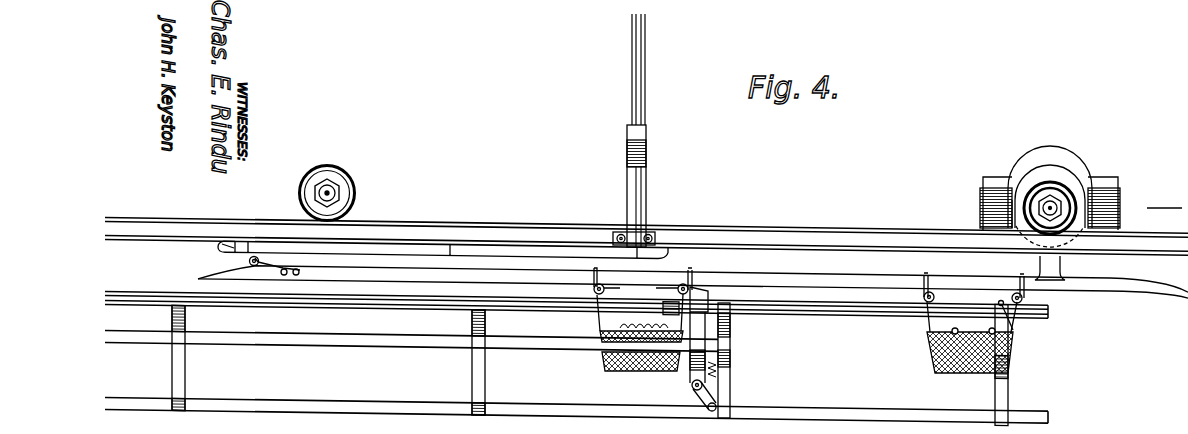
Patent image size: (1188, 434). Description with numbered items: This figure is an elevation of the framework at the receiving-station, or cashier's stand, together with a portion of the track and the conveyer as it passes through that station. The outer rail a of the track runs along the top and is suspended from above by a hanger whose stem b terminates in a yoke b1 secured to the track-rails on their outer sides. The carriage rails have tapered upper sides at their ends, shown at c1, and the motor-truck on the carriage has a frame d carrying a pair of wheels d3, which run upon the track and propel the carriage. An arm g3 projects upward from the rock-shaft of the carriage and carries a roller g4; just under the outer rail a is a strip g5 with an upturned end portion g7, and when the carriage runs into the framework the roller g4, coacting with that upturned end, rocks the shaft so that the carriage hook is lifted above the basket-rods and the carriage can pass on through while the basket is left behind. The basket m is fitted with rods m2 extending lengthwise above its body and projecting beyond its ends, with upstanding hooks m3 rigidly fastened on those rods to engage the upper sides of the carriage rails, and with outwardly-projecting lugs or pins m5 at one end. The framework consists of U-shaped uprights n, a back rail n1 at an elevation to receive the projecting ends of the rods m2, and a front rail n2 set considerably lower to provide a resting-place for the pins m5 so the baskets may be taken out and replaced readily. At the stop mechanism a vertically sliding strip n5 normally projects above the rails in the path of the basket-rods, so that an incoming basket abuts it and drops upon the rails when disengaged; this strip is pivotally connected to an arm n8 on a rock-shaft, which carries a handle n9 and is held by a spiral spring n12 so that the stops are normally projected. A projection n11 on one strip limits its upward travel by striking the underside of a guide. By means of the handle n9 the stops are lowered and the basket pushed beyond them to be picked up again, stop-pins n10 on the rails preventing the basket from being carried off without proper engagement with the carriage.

The outer rail a is at (137, 219).
The stem b is at (646, 63).
The yoke b1 is at (646, 179).
The tapered end c1 is at (197, 280).
The frame d is at (1050, 213).
The wheels d3 is at (1024, 208).
The arm g3 is at (339, 183).
The roller g4 is at (257, 257).
The strip g5 is at (489, 252).
The upturned end portion g7 is at (226, 243).
The basket m is at (603, 364).
The rods m2 is at (641, 291).
The upstanding hooks m3 is at (592, 281).
The lugs or pins m5 is at (644, 322).
The U-shaped uprights n is at (1120, 300).
The back rail n1 is at (132, 294).
The front rail n2 is at (318, 328).
The strip n5 is at (710, 297).
The arm n8 is at (717, 406).
The handle n9 is at (691, 386).
The stop-pins n10 is at (1004, 306).
The projection n11 is at (730, 319).
The spiral spring n12 is at (730, 374).